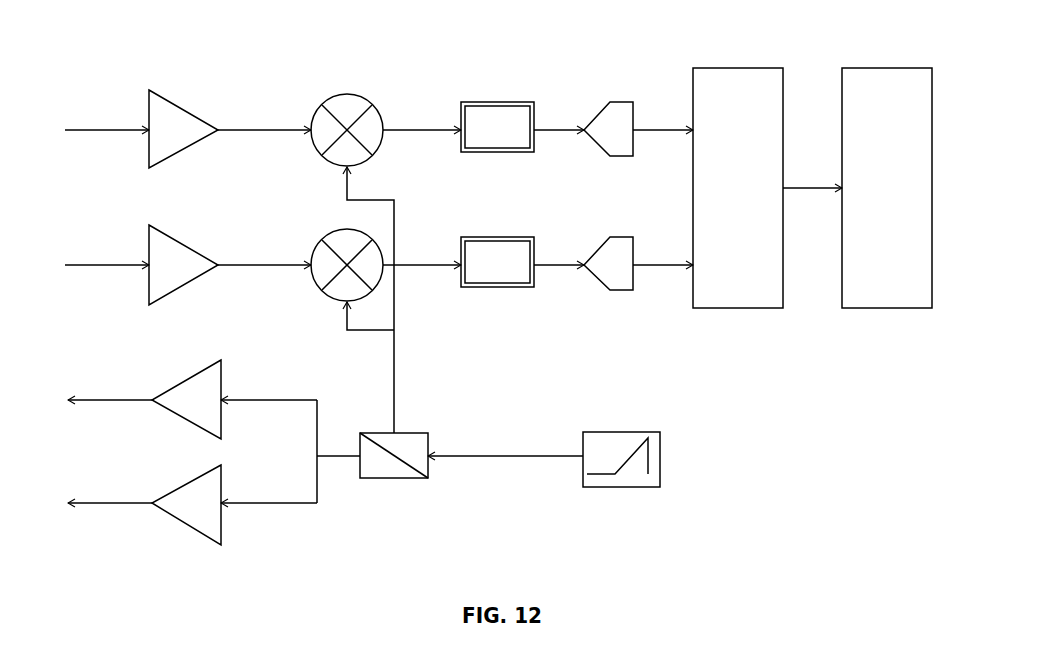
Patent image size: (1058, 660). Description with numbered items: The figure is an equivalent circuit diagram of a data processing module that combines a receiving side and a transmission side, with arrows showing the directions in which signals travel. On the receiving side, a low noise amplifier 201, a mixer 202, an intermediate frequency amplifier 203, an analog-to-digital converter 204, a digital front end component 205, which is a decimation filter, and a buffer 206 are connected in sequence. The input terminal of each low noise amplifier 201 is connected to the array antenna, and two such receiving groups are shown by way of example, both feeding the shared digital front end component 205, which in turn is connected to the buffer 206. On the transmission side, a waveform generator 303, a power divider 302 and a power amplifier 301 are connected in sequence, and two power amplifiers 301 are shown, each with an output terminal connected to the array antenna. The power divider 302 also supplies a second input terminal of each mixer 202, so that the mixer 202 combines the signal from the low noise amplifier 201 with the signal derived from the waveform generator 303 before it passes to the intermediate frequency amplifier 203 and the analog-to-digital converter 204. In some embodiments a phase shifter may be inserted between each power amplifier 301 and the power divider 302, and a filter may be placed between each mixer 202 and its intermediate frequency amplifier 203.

The low noise amplifier 201 is at (170, 98).
The mixer 202 is at (346, 93).
The intermediate frequency amplifier 203 is at (508, 102).
The analog-to-digital converter 204 is at (628, 102).
The digital front end component 205 is at (738, 68).
The buffer 206 is at (886, 68).
The power amplifier 301 is at (223, 368).
The power divider 302 is at (423, 433).
The waveform generator 303 is at (623, 432).